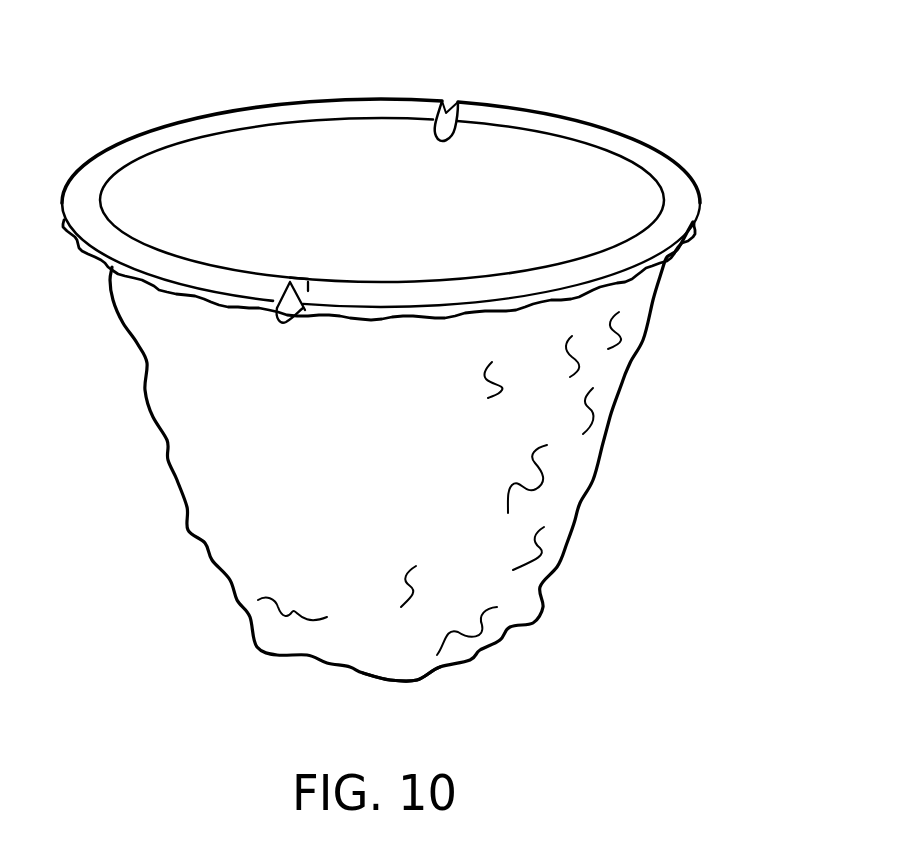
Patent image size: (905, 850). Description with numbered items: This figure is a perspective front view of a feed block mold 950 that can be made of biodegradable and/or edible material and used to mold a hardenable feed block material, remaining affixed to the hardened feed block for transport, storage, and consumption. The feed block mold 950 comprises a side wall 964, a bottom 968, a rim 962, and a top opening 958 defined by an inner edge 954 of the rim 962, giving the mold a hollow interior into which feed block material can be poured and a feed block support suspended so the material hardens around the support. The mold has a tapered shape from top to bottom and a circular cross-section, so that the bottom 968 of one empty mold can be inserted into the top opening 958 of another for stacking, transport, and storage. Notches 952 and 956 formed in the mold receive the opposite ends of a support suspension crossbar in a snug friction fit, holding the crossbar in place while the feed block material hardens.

The feed block mold 950 is at (150, 516).
The notch 952 is at (447, 113).
The inner edge 954 is at (658, 186).
The notch 956 is at (297, 317).
The top opening 958 is at (348, 197).
The rim 962 is at (673, 219).
The side wall 964 is at (404, 502).
The bottom 968 is at (418, 680).